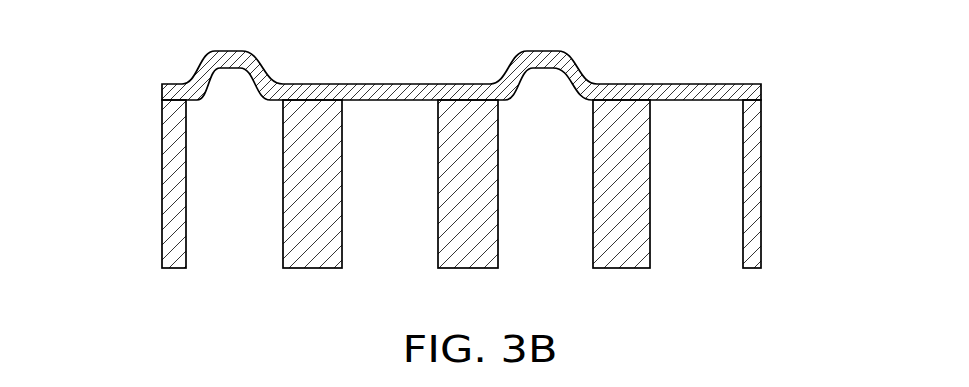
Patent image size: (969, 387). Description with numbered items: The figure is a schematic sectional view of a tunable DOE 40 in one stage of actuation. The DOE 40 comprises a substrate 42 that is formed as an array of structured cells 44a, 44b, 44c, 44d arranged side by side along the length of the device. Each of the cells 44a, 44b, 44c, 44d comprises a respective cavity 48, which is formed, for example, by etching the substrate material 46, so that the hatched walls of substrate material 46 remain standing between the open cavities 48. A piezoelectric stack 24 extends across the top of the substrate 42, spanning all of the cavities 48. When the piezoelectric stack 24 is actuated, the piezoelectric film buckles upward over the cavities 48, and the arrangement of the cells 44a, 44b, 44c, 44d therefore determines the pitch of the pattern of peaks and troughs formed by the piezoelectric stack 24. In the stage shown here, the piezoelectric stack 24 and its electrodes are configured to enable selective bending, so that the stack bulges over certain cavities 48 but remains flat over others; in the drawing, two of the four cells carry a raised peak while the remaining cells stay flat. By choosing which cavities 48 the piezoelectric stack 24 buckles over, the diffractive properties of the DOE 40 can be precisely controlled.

The tunable DOE 40 is at (143, 58).
The piezoelectric stack 24 is at (695, 92).
The substrate 42 is at (475, 151).
The structured cell 44a is at (160, 273).
The structured cell 44b is at (316, 275).
The structured cell 44c is at (468, 275).
The structured cell 44d is at (620, 275).
The substrate material 46 is at (293, 128).
The cavity 48 is at (712, 186).